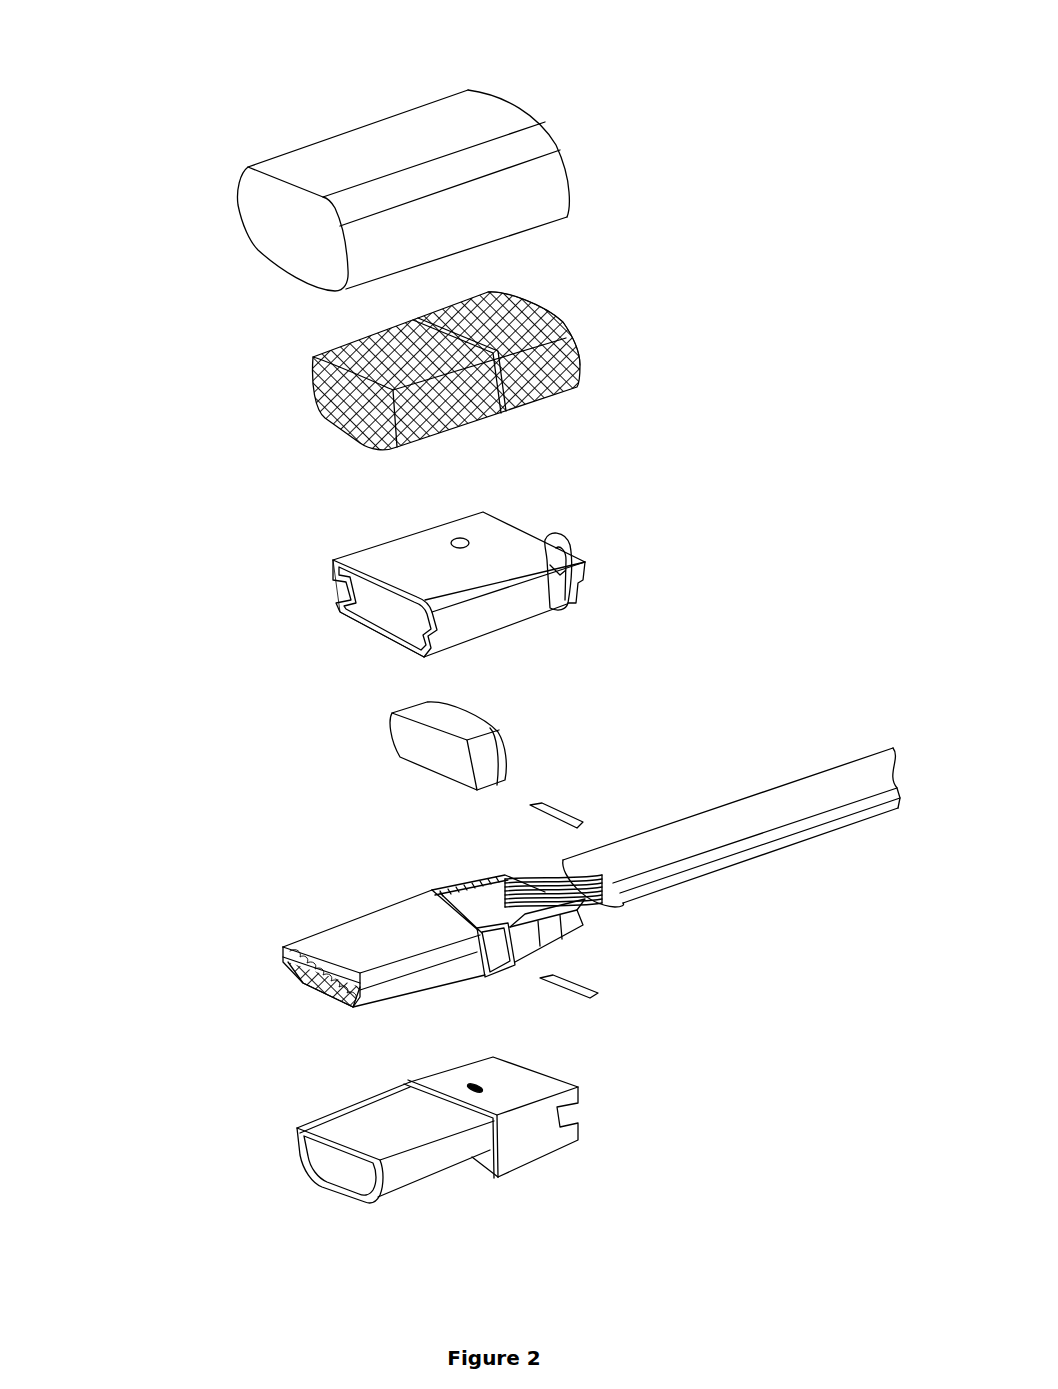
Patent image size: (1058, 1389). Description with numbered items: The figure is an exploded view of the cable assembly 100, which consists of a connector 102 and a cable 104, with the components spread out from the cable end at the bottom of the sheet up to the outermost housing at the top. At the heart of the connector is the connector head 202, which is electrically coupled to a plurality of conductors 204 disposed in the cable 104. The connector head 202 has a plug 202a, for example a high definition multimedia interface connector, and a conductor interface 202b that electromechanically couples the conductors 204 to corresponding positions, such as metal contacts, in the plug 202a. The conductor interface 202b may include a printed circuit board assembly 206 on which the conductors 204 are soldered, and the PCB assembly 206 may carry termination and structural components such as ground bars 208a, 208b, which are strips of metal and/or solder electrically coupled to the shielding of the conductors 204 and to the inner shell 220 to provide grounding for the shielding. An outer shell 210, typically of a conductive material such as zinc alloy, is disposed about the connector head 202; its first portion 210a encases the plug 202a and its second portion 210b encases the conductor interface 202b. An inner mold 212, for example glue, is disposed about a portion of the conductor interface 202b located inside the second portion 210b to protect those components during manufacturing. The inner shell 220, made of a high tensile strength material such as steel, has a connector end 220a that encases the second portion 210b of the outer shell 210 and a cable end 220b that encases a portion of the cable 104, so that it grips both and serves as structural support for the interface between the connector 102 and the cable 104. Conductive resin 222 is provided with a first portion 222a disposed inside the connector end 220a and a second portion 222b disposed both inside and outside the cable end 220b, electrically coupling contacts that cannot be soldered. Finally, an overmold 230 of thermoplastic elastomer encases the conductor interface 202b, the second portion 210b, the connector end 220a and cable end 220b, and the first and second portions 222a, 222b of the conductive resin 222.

The cable assembly 100 is at (186, 112).
The connector 102 is at (230, 85).
The cable 104 is at (847, 830).
The connector head 202 is at (277, 969).
The plug 202a is at (399, 969).
The conductor interface 202b is at (527, 962).
The conductors 204 is at (535, 875).
The printed circuit board (PCB) assembly 206 is at (510, 912).
The ground bar 208a is at (586, 822).
The ground bar 208b is at (588, 998).
The outer shell 210 is at (353, 1185).
The first portion 210a is at (487, 1193).
The second portion 210b is at (598, 1153).
The inner mold 212 is at (393, 744).
The inner shell 220 is at (418, 626).
The connector end 220a is at (458, 661).
The cable end 220b is at (592, 617).
The conductive resin 222 is at (367, 393).
The first portion 222a is at (456, 444).
The second portion 222b is at (575, 412).
The overmold 230 is at (244, 229).